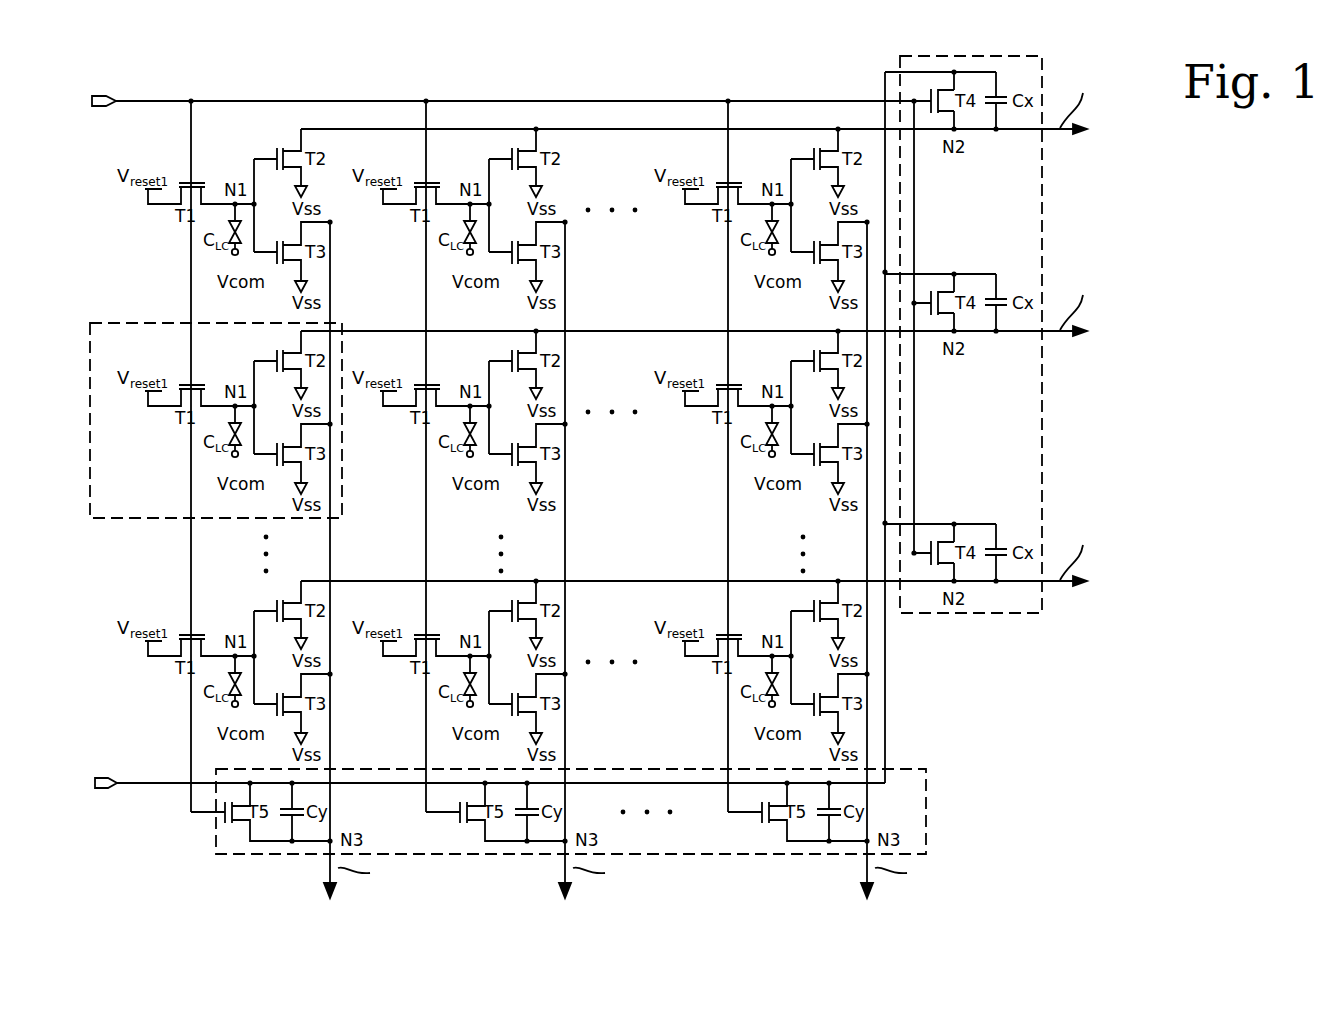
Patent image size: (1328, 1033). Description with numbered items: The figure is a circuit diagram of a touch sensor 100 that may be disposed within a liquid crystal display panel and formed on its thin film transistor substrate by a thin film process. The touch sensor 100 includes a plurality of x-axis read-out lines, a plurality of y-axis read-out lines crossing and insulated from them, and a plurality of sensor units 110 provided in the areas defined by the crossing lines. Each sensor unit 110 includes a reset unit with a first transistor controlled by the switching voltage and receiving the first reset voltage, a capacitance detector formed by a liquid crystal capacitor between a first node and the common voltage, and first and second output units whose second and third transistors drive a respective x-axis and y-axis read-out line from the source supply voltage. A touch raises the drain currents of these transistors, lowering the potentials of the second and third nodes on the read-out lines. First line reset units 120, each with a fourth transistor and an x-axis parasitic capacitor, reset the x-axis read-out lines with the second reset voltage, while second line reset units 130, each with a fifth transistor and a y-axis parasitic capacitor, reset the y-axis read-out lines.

The touch sensor 100 is at (702, 82).
The sensor unit 110 is at (137, 322).
The first line reset unit 120 is at (1043, 204).
The second line reset unit 130 is at (927, 812).